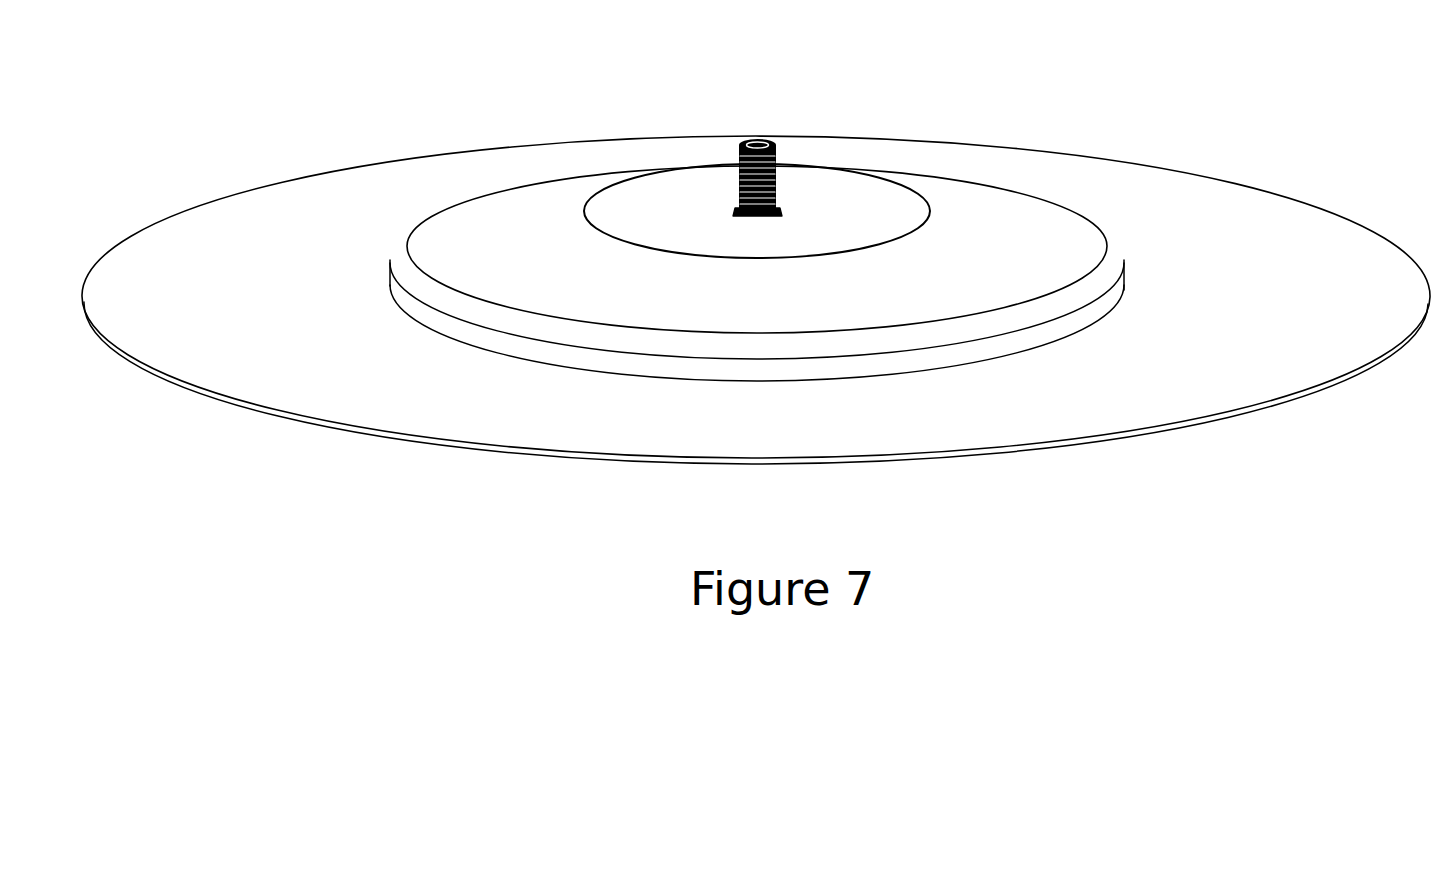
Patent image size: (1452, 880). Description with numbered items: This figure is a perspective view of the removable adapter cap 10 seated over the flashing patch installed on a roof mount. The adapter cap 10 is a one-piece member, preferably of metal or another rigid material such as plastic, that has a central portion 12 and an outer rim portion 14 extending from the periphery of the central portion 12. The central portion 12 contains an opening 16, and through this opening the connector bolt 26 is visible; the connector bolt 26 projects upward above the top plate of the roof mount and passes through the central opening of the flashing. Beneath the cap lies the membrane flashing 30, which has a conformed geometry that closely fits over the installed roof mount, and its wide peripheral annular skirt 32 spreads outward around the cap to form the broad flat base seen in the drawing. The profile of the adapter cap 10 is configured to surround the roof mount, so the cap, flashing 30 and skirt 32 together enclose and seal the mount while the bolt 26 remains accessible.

The adapter cap 10 is at (761, 279).
The central portion 12 is at (761, 252).
The outer rim portion 14 is at (457, 333).
The opening 16 is at (787, 212).
The connector bolt 26 is at (773, 158).
The membrane flashing 30 is at (1078, 163).
The peripheral annular skirt 32 is at (1343, 375).